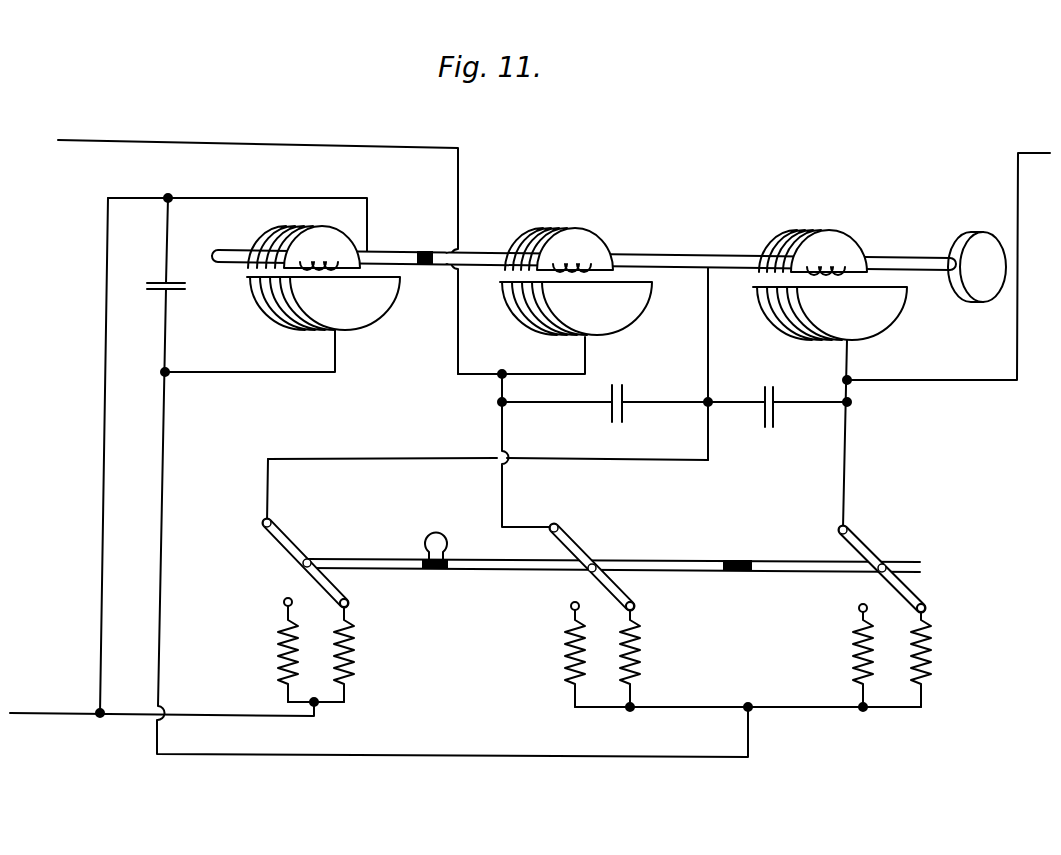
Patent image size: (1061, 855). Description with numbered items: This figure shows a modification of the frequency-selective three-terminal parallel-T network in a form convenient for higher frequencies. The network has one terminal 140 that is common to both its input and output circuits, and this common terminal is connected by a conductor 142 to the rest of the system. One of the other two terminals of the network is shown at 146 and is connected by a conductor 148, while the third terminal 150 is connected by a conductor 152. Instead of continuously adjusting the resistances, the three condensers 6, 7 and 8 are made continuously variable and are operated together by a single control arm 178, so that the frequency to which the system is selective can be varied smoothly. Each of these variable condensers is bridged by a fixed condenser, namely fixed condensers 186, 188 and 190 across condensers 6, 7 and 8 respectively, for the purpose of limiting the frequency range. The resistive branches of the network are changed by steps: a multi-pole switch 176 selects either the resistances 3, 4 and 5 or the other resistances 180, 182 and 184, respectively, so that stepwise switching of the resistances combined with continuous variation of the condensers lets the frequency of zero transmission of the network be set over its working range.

The conductor 148 is at (118, 140).
The conductor 152 is at (1033, 152).
The fixed condenser 190 is at (147, 286).
The condenser 8 is at (307, 227).
The condenser 7 is at (566, 228).
The condenser 6 is at (837, 232).
The single control arm 178 is at (667, 252).
The network terminal 146 is at (502, 375).
The network terminal 150 is at (847, 380).
The fixed condenser 188 is at (625, 408).
The fixed condenser 186 is at (775, 410).
The multi-pole switch 176 is at (653, 567).
The resistance 184 is at (278, 655).
The resistance 5 is at (355, 652).
The resistance 182 is at (567, 662).
The resistance 4 is at (640, 655).
The resistance 180 is at (853, 657).
The resistance 3 is at (932, 667).
The conductor 142 is at (40, 713).
The common terminal 140 is at (100, 713).